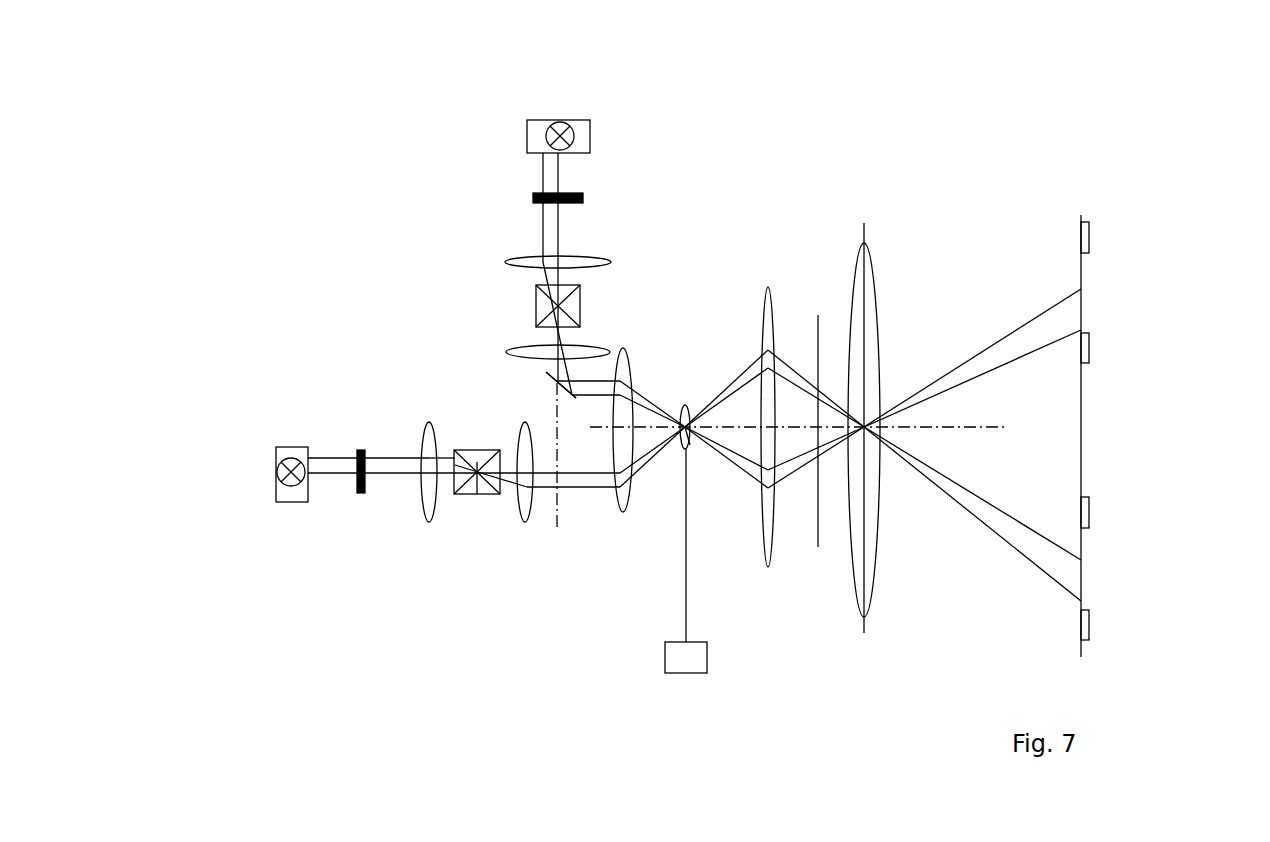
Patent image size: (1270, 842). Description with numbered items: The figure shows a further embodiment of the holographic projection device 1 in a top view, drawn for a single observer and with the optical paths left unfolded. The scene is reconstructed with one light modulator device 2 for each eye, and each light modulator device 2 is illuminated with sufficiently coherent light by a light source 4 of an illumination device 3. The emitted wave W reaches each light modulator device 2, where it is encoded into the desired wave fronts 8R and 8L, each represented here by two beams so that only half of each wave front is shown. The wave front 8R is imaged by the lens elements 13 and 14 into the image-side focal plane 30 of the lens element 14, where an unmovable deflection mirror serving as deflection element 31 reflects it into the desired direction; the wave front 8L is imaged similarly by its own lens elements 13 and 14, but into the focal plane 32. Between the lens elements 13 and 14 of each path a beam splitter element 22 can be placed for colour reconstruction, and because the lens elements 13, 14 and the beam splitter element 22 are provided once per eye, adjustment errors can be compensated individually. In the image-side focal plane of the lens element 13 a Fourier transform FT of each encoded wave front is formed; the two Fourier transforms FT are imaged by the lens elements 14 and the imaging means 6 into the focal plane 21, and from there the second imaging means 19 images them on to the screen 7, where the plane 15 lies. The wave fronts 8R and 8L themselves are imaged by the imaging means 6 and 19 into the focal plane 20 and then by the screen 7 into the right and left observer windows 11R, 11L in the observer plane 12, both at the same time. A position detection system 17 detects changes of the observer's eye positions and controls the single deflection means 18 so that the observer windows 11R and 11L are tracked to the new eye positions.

The holographic projection device 1 is at (249, 122).
The light modulator device 2 is at (533, 195).
The illumination device 3 is at (535, 128).
The line light source 4 is at (555, 122).
The wave W is at (543, 182).
The wave front for the right eye 8R is at (543, 235).
The wave front for the left eye 8L is at (403, 472).
The lens element 13 is at (597, 262).
The beam splitter element 22 is at (542, 303).
The Fourier transform FT is at (580, 303).
The lens element 14 is at (508, 350).
The deflection element 31 is at (543, 368).
The image-side focal plane 30 is at (528, 392).
The focal plane 32 is at (557, 503).
The imaging means 6 is at (625, 513).
The focal plane 21 is at (686, 405).
The position detection system 17 is at (686, 564).
The deflection means 18 is at (690, 445).
The second imaging means 19 is at (768, 297).
The focal plane 20 is at (818, 547).
The screen 7 is at (870, 282).
The plane 15 is at (864, 632).
The observer plane 12 is at (1082, 650).
The right observer window 11R is at (1087, 270).
The left observer window 11L is at (1088, 550).